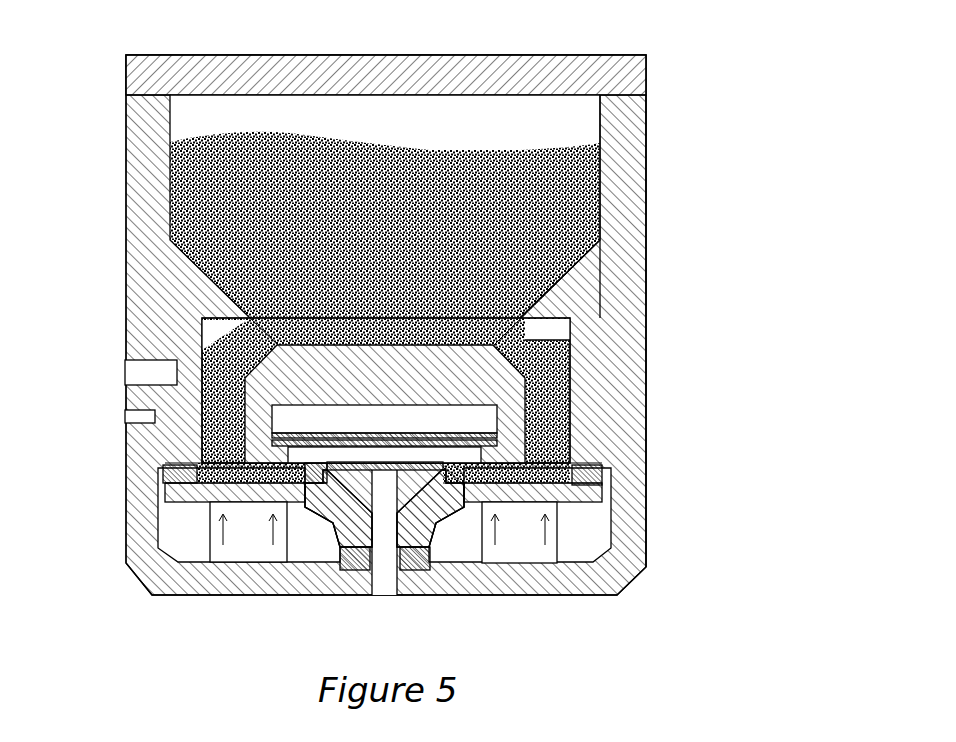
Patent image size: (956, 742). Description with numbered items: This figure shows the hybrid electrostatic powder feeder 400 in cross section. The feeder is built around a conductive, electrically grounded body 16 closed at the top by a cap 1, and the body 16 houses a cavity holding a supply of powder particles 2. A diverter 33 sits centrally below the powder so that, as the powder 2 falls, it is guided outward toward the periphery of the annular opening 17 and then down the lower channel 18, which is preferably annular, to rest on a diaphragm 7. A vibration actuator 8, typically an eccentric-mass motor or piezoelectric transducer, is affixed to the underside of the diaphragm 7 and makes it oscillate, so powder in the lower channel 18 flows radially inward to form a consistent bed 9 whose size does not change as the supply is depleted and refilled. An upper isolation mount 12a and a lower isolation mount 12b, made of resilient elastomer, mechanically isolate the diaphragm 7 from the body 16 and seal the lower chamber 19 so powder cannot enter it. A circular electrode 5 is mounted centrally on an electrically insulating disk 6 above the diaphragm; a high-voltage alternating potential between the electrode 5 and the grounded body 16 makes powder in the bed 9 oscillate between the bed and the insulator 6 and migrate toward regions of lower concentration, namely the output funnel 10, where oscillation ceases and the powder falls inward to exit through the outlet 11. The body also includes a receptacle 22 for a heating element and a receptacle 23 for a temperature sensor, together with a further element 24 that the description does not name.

The cap 1 is at (165, 70).
The powder particles 2 is at (235, 168).
The electrode 5 is at (447, 425).
The insulator 6 is at (540, 385).
The diaphragm 7 is at (560, 497).
The vibration actuator 8 is at (248, 550).
The bed 9 is at (305, 470).
The output funnel 10 is at (413, 568).
The outlet 11 is at (383, 578).
The upper isolation mount 12a is at (163, 470).
The lower isolation mount 12b is at (414, 572).
The body 16 is at (645, 175).
The annular opening 17 is at (583, 267).
The lower channel 18 is at (555, 425).
The lower chamber 19 is at (175, 528).
The receptacle 22 is at (128, 373).
The receptacle 23 is at (127, 418).
The gasket 24 is at (400, 470).
The diverter 33 is at (384, 351).
The feeder 400 is at (716, 107).